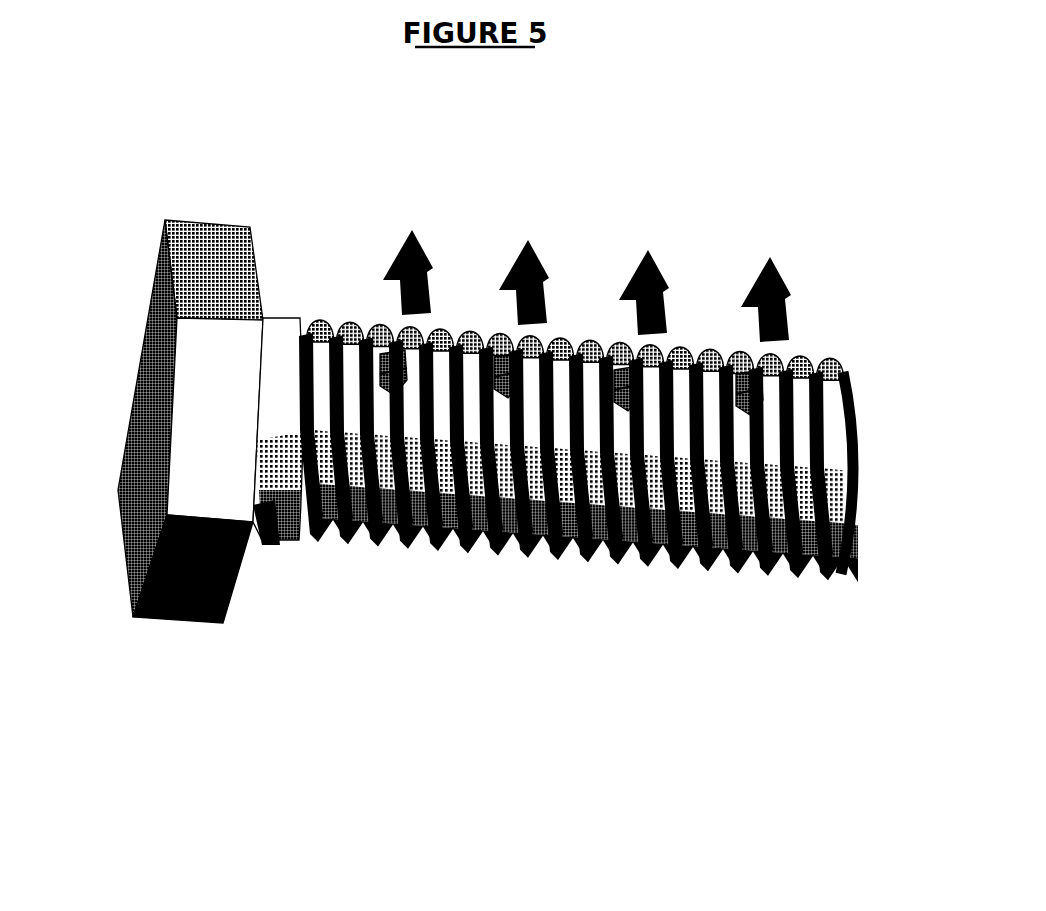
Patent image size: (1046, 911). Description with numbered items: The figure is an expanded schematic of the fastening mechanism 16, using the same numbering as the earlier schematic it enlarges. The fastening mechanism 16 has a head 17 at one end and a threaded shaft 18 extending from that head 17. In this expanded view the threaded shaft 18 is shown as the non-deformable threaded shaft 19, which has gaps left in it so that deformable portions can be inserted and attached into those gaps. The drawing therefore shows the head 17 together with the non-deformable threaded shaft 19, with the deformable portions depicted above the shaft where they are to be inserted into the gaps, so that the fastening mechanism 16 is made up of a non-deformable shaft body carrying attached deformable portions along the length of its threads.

The fastening mechanism 16 is at (474, 546).
The head 17 is at (128, 388).
The threaded shaft 18 is at (579, 504).
The non-deformable threaded shaft 19 is at (805, 463).